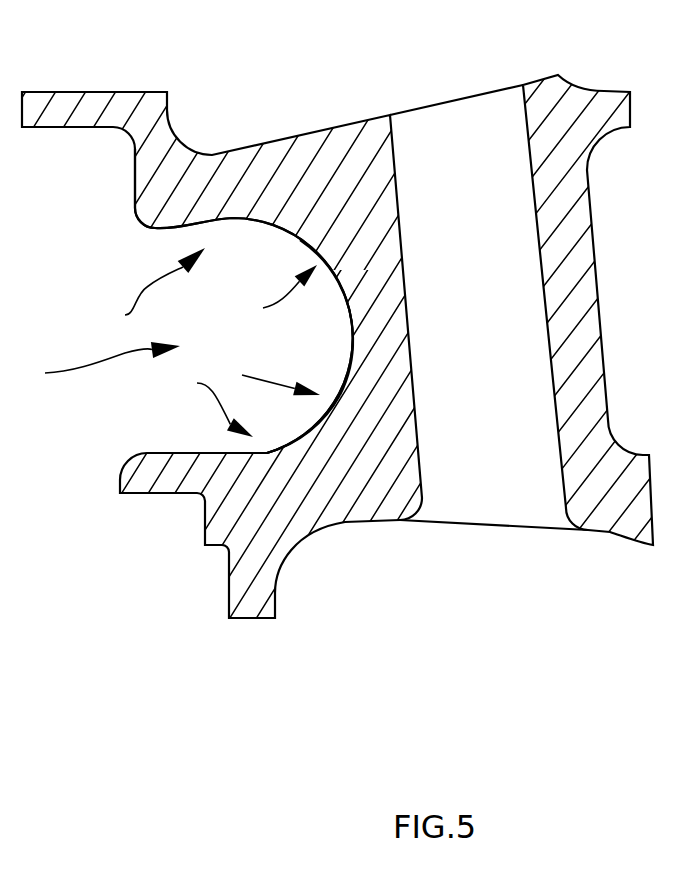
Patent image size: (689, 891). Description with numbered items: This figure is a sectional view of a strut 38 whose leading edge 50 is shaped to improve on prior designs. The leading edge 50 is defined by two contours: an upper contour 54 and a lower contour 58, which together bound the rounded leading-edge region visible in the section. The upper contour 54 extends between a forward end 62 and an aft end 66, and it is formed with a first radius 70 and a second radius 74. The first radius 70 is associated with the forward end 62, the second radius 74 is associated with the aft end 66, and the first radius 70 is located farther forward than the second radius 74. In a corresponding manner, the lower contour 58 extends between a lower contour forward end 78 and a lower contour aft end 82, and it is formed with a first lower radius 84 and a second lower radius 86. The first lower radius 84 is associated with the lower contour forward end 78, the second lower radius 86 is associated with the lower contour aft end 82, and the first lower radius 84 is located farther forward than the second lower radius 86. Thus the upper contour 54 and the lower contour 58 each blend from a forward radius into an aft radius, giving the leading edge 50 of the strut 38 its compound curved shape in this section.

The strut 38 is at (343, 135).
The leading edge 50 is at (96, 364).
The upper contour 54 is at (255, 225).
The lower contour 58 is at (308, 433).
The forward end 62 is at (167, 230).
The aft end 66 is at (348, 313).
The first radius 70 is at (149, 287).
The second radius 74 is at (274, 293).
The lower contour forward end 78 is at (260, 450).
The lower contour aft end 82 is at (353, 352).
The first lower radius 84 is at (208, 405).
The second lower radius 86 is at (264, 379).